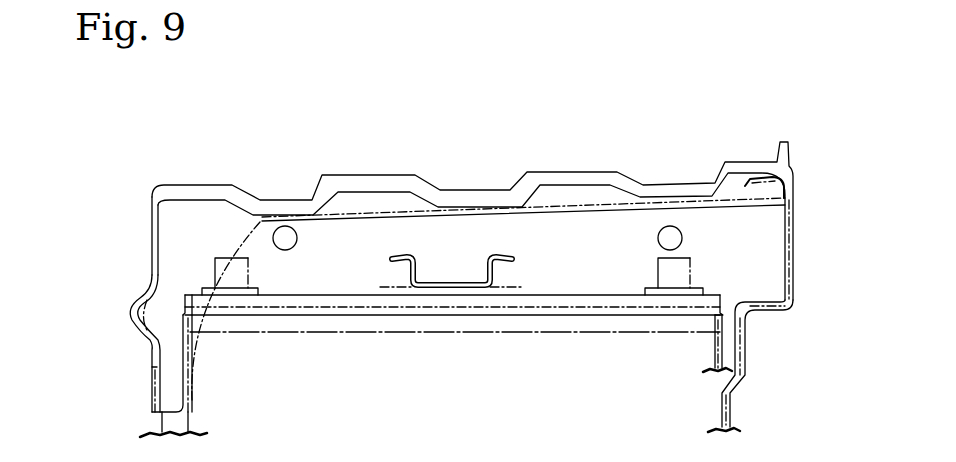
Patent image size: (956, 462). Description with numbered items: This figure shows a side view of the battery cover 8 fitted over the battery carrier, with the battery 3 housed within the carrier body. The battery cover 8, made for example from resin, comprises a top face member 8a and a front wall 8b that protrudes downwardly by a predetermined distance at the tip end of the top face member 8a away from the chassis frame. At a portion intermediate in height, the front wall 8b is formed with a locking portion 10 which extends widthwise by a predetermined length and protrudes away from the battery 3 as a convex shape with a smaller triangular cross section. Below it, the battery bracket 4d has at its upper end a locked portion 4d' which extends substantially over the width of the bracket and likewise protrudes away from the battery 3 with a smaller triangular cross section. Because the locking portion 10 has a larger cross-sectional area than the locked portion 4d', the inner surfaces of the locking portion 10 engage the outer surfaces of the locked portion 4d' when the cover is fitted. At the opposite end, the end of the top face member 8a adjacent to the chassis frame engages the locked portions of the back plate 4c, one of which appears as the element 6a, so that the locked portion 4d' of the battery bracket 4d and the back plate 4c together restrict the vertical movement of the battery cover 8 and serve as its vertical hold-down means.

The battery cover 8 is at (455, 150).
The top face member 8a is at (383, 175).
The front wall 8b is at (152, 229).
The engaging hook 6a is at (777, 198).
The locking portion 10 is at (128, 318).
The locked portion 4d' is at (115, 330).
The battery bracket 4d is at (217, 329).
The battery 3 is at (512, 377).
The back plate 4c is at (730, 402).